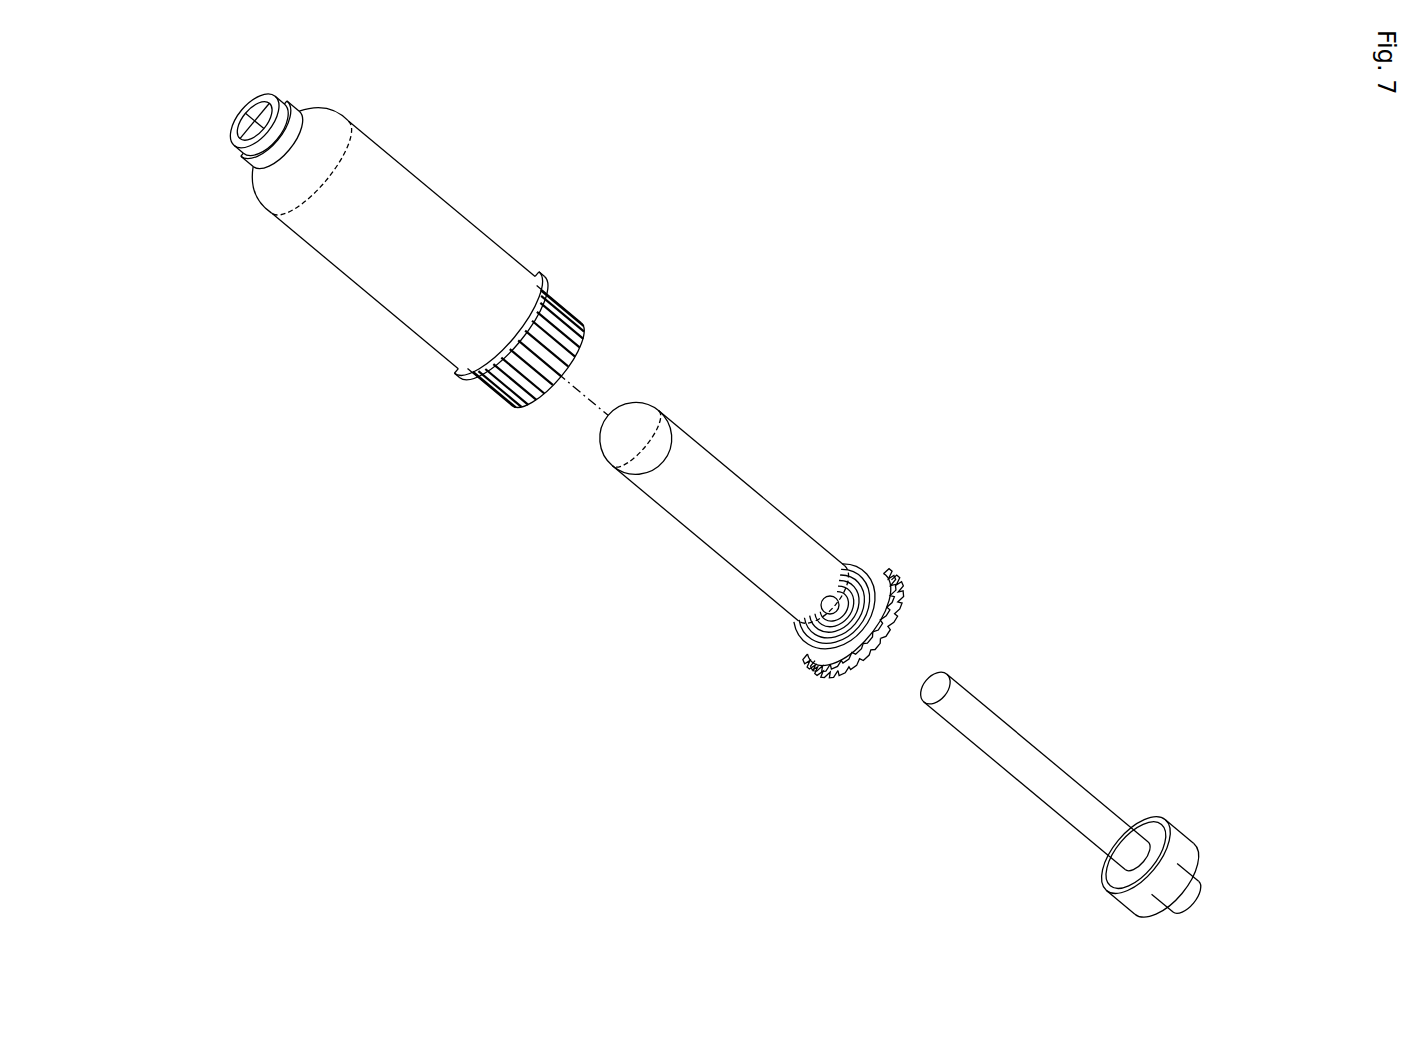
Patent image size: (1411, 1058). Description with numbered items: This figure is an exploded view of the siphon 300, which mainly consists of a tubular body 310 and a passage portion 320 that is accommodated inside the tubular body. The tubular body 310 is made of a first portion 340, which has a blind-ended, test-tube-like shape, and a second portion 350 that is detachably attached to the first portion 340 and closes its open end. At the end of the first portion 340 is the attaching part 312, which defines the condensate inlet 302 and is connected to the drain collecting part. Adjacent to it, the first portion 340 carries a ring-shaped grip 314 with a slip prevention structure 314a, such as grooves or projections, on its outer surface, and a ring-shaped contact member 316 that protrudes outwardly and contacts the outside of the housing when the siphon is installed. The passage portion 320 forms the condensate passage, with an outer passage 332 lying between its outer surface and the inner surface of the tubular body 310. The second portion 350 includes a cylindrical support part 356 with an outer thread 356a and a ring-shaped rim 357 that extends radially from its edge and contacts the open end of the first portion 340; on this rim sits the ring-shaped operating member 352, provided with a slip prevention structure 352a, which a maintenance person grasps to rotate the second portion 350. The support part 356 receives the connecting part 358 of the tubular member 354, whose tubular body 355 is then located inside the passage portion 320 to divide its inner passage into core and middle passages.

The siphon 300 is at (827, 252).
The condensate inlet 302 is at (204, 131).
The attaching part 312 is at (200, 120).
The tubular body 310 is at (300, 426).
The first portion 340 is at (413, 343).
The contact member 316 is at (545, 270).
The grip 314 is at (587, 290).
The slip prevention structure 314a is at (587, 315).
The second portion 350 is at (803, 683).
The passage portion 320 is at (770, 480).
The outer passage 332 is at (774, 609).
The operating member 352 is at (920, 563).
The slip prevention structure 352a is at (912, 580).
The support part 356 is at (913, 595).
The rim 357 is at (916, 647).
The outer thread 356a is at (749, 666).
The tubular member 354 is at (1047, 745).
The tubular body 355 is at (1161, 832).
The connecting part 358 is at (1100, 895).